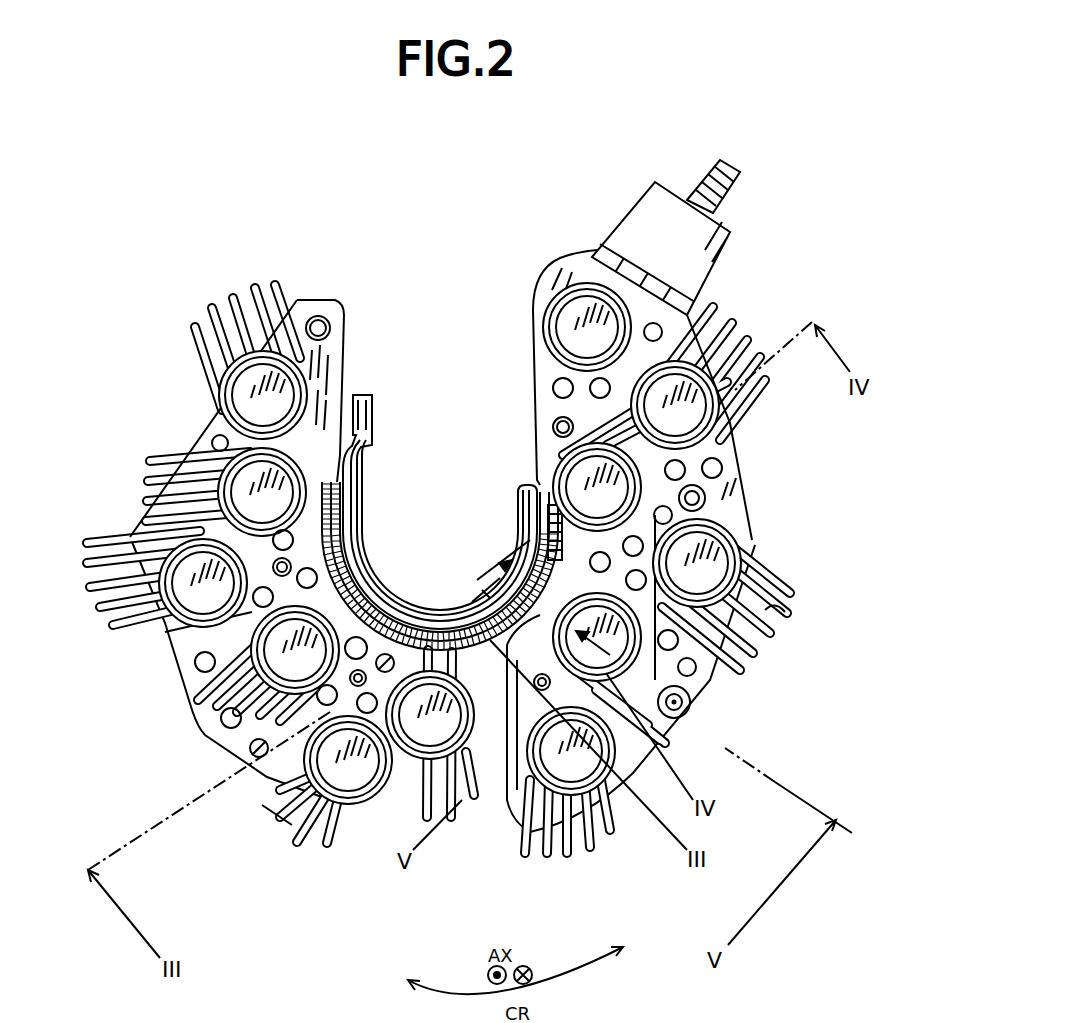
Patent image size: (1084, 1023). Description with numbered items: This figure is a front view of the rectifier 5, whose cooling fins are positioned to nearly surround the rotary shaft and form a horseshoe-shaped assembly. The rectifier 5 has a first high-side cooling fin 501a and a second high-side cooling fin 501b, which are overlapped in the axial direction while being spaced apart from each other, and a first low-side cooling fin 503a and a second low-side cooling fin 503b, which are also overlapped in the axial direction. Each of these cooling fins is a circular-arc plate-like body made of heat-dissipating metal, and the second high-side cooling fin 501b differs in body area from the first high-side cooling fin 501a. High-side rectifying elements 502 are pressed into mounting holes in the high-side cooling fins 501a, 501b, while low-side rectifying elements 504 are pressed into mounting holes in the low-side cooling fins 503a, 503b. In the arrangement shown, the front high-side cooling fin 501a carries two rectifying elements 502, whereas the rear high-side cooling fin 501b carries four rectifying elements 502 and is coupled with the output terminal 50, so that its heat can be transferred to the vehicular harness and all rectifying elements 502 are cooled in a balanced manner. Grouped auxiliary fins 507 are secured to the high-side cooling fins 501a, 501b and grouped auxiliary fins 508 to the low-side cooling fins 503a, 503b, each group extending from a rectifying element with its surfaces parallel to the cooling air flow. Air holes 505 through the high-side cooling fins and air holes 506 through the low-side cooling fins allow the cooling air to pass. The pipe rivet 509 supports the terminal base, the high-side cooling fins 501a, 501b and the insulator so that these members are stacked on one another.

The rectifier 5 is at (463, 243).
The output terminal 50 is at (727, 195).
The first high-side cooling fin 501a is at (640, 562).
The second high-side cooling fin 501b is at (730, 492).
The high-side rectifying element 502 is at (553, 333).
The first low-side cooling fin 503a is at (245, 620).
The second low-side cooling fin 503b is at (187, 710).
The low-side rectifying element 504 is at (267, 398).
The air hole 505 is at (660, 330).
The air hole 506 is at (213, 443).
The auxiliary fin 507 is at (780, 615).
The auxiliary fin 508 is at (277, 832).
The pipe rivet 509 is at (692, 697).